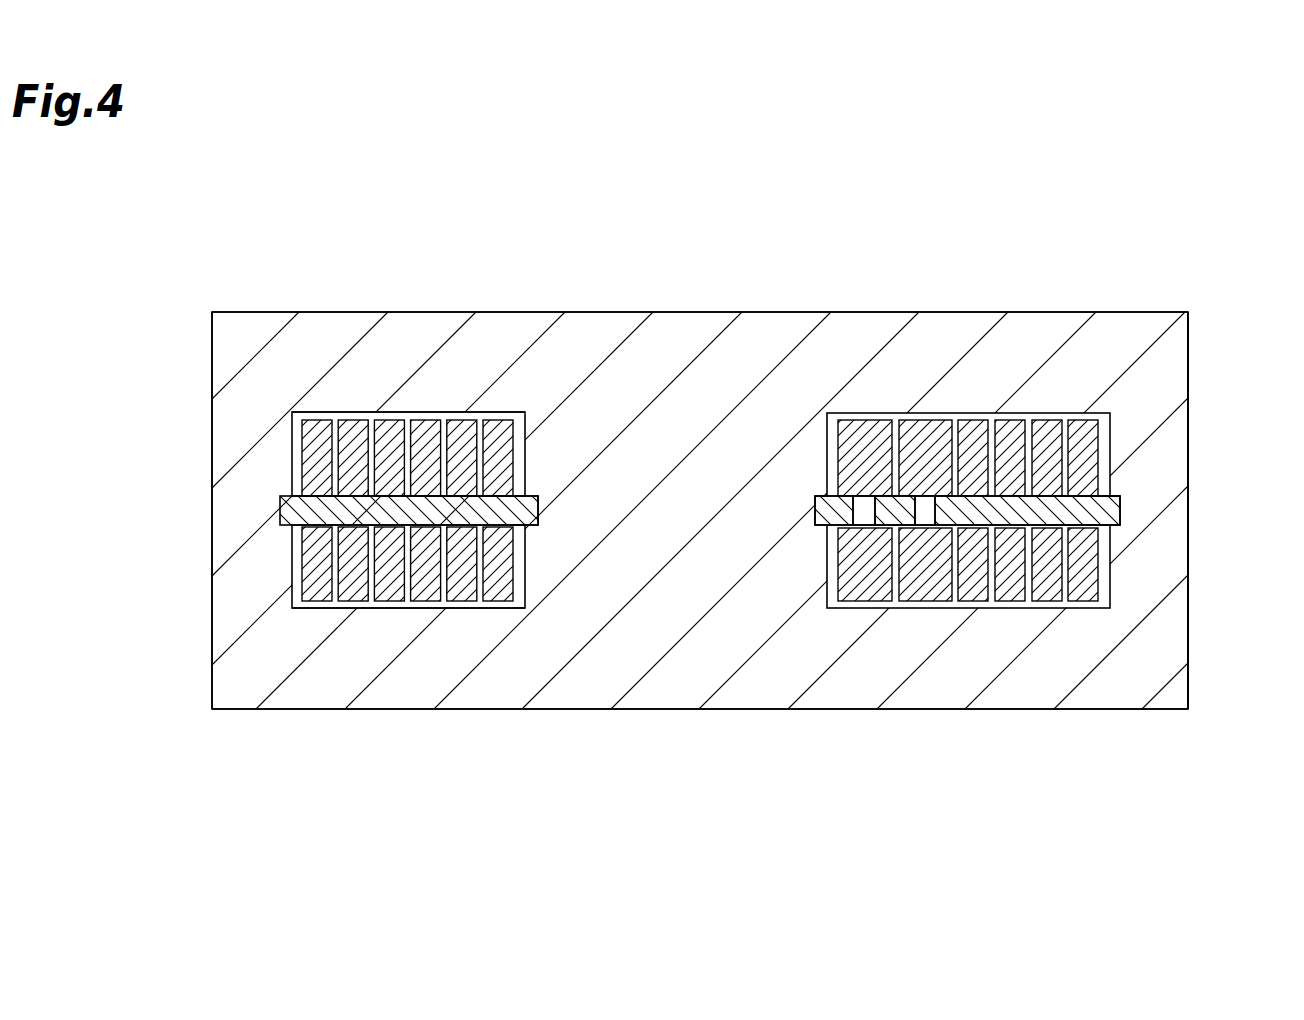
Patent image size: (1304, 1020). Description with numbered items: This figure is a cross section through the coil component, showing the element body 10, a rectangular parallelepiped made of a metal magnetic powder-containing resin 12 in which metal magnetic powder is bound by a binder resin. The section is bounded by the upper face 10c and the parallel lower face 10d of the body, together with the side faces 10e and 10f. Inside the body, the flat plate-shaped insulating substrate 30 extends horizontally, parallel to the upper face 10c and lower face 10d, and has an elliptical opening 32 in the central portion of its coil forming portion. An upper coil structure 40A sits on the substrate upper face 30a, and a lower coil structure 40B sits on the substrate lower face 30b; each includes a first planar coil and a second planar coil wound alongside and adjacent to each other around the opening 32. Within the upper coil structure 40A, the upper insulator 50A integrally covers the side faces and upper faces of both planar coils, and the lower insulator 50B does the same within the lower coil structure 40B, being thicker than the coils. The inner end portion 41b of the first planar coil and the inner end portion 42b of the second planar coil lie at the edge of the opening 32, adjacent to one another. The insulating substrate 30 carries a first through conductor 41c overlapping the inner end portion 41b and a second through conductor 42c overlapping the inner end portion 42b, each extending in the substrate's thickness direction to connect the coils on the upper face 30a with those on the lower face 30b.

The element body 10 is at (288, 310).
The metal magnetic powder-containing resin 12 is at (1170, 344).
The upper face 10c is at (1118, 311).
The lower face 10d is at (1128, 710).
The side face 10e is at (1190, 670).
The side face 10f is at (212, 673).
The insulating substrate 30 is at (283, 510).
The opening 32 is at (540, 496).
The substrate upper face 30a is at (1120, 496).
The substrate lower face 30b is at (1120, 525).
The upper coil structure 40A is at (294, 434).
The lower coil structure 40B is at (294, 578).
The upper insulator 50A is at (430, 412).
The lower insulator 50B is at (465, 609).
The inner end portion 41b is at (932, 428).
The first through conductor 41c is at (932, 511).
The inner end portion 42b is at (868, 428).
The second through conductor 42c is at (858, 511).